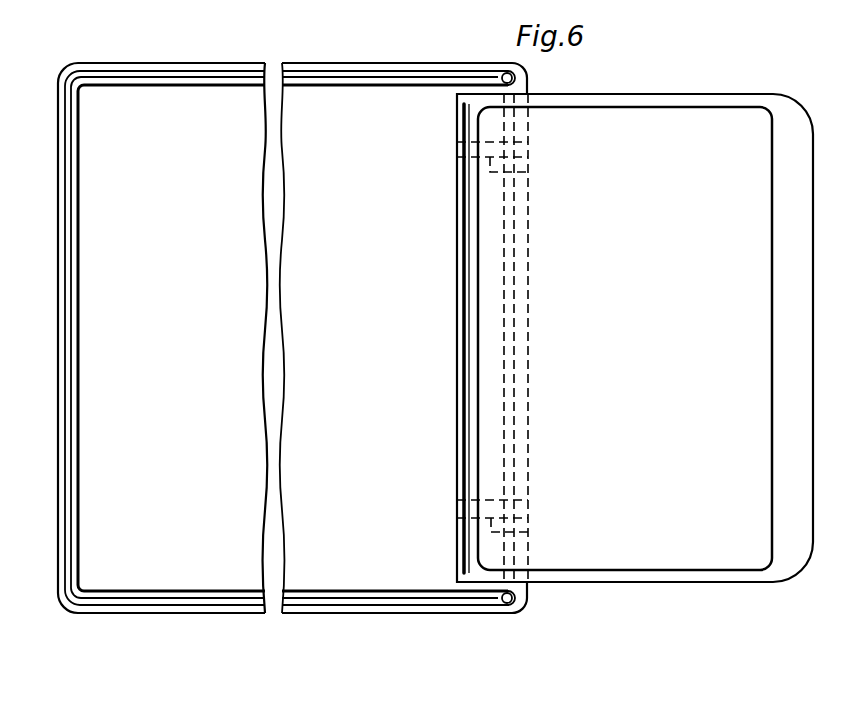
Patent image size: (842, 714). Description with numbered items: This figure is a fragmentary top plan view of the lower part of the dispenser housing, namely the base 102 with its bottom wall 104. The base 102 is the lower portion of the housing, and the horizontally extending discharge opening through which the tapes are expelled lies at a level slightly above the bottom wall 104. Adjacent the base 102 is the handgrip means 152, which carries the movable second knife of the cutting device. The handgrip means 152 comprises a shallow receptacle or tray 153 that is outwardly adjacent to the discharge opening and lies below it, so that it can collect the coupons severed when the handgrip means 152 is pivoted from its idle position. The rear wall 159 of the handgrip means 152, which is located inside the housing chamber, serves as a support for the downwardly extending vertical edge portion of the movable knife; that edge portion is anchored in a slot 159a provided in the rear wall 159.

The base 102 is at (117, 608).
The bottom wall 104 is at (322, 92).
The handgrip means 152 is at (789, 91).
The receptacle 153 is at (623, 122).
The rear wall 159 is at (472, 458).
The slot 159a is at (466, 392).